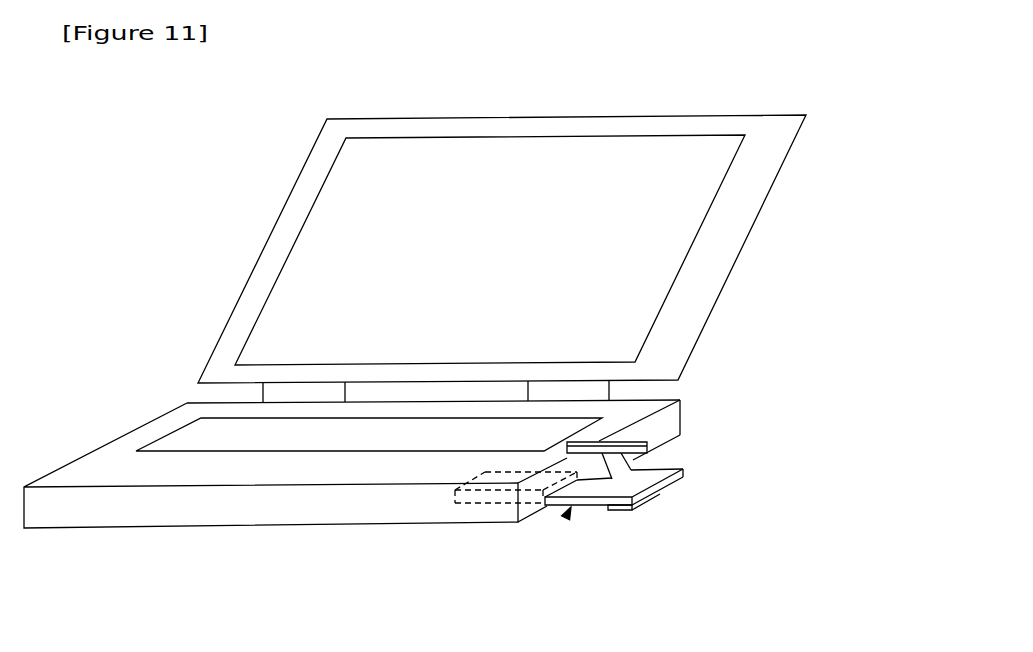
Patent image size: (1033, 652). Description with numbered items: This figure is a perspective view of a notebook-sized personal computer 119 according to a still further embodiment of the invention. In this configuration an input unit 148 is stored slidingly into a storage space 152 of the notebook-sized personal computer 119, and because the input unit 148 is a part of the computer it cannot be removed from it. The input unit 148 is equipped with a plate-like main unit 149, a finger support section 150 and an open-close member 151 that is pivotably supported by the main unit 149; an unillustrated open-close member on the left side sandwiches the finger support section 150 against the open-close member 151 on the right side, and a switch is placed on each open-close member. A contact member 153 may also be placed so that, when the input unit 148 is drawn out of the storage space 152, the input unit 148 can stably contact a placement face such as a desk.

The notebook-sized personal computer 119 is at (108, 500).
The input unit 148 is at (566, 517).
The plate-like main unit 149 is at (618, 487).
The finger support section 150 is at (642, 438).
The open-close member 151 is at (683, 472).
The storage space 152 is at (467, 498).
The contact member 153 is at (635, 504).